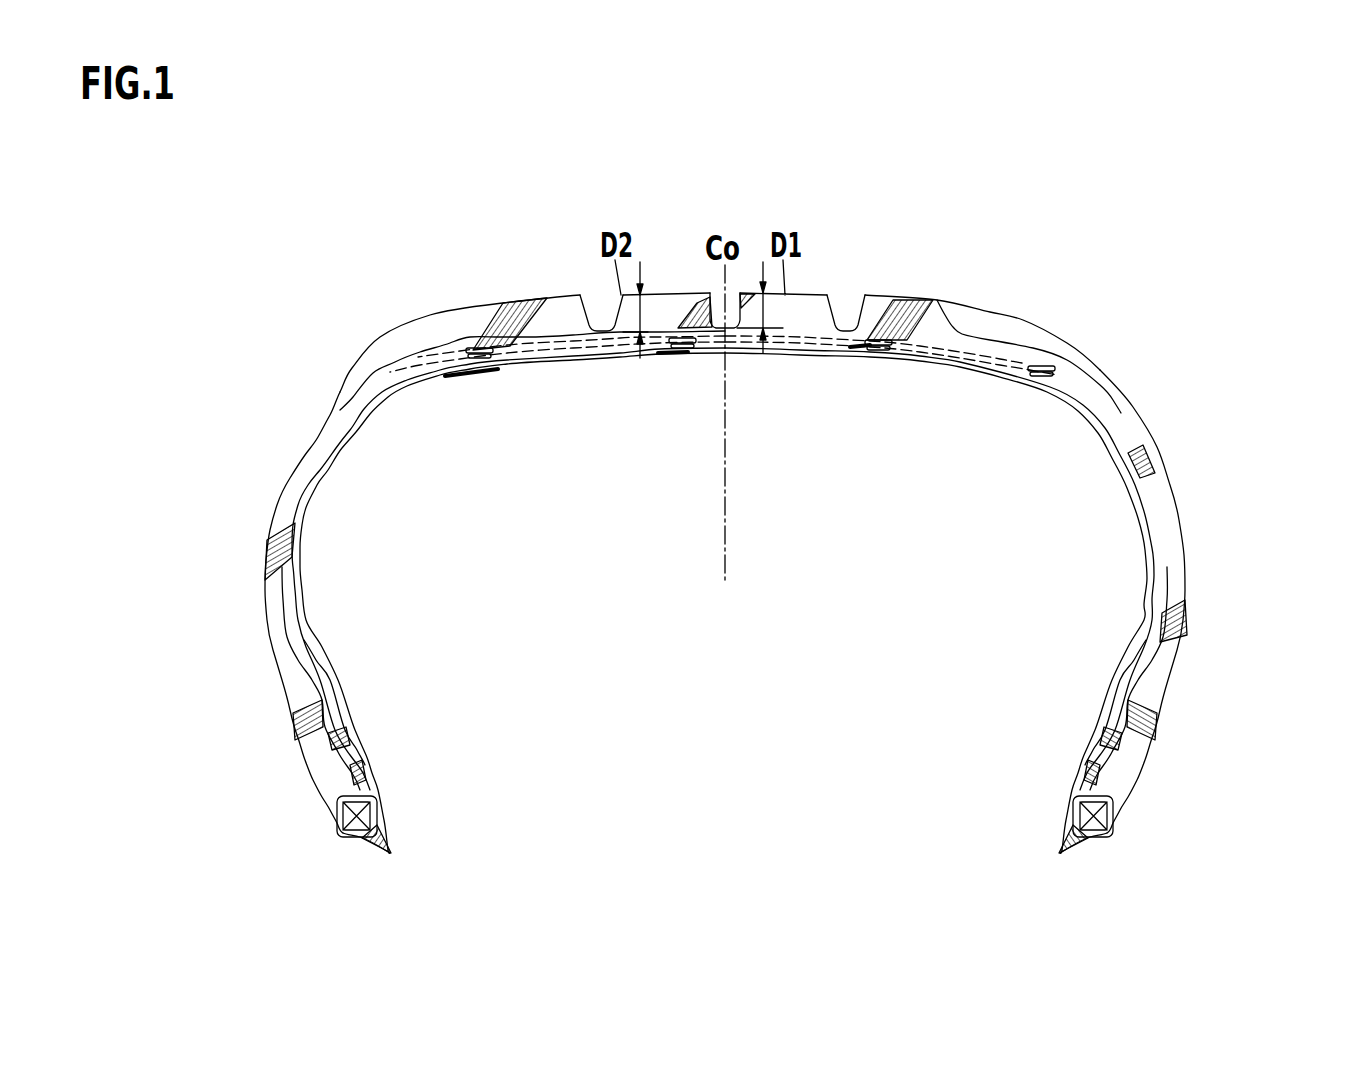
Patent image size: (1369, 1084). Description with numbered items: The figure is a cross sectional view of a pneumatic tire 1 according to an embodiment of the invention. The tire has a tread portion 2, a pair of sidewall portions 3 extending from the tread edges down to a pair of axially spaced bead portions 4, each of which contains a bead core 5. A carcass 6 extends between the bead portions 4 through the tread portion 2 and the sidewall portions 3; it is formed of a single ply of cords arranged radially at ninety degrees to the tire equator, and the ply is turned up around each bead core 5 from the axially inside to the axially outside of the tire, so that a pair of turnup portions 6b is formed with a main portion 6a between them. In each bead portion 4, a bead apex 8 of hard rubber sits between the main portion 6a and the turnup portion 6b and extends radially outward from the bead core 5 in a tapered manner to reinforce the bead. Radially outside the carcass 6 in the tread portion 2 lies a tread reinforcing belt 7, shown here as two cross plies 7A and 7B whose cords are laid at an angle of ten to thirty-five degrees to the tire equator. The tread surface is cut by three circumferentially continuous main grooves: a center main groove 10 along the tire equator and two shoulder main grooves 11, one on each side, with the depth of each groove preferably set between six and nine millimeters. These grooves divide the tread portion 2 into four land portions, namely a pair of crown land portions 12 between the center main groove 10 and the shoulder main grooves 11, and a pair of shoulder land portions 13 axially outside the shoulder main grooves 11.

The pneumatic tire 1 is at (1155, 285).
The tread portion 2 is at (1027, 289).
The sidewall portion 3 is at (237, 565).
The bead portion 4 is at (430, 808).
The bead core 5 is at (358, 830).
The carcass 6 is at (1003, 596).
The main portion 6a is at (1108, 692).
The turnup portion 6b is at (288, 605).
The tread reinforcing belt 7 is at (890, 487).
The belt ply 7A is at (872, 347).
The belt ply 7B is at (807, 343).
The bead apex 8 is at (350, 768).
The center main groove 10 is at (746, 286).
The shoulder main groove 11 is at (596, 284).
The crown land portion 12 is at (668, 292).
The shoulder land portion 13 is at (523, 300).